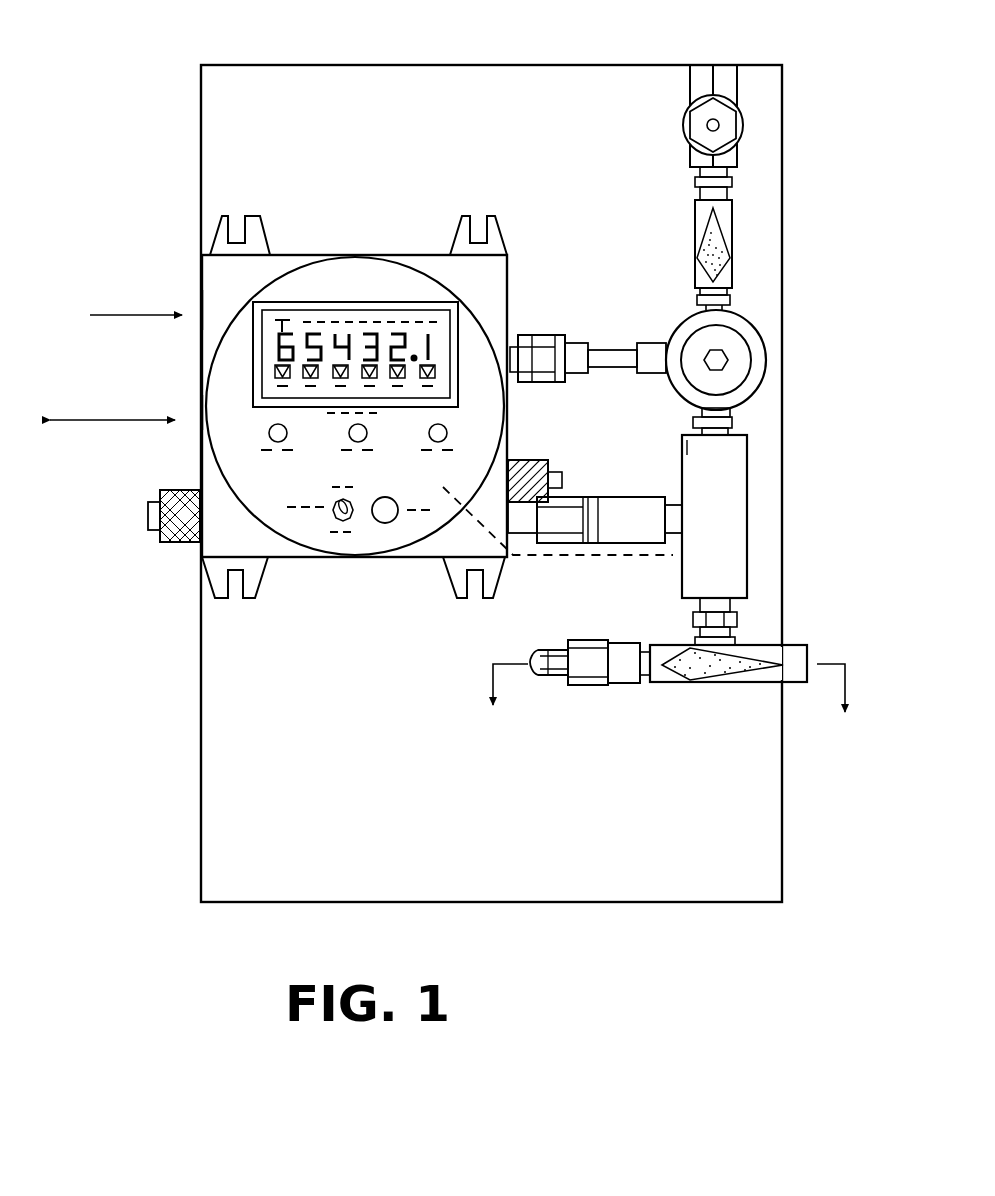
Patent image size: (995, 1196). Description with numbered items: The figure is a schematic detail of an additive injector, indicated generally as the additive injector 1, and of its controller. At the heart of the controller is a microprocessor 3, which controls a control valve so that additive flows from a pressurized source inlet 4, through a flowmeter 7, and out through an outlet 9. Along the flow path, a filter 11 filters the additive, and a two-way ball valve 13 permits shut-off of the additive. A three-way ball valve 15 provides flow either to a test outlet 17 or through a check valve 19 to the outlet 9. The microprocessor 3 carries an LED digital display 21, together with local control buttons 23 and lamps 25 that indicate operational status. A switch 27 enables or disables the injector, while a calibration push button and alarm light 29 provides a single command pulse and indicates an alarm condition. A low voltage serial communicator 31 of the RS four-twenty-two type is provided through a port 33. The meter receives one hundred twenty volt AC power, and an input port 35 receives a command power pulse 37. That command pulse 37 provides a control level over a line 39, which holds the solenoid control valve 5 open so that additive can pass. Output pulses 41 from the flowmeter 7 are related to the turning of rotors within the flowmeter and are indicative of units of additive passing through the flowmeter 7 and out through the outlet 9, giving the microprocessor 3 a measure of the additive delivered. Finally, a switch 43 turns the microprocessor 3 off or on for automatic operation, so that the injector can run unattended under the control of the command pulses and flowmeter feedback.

The additive injector 1 is at (176, 653).
The microprocessor 3 is at (403, 558).
The pressurized source inlet 4 is at (700, 65).
The solenoid control valve 5 is at (753, 398).
The flowmeter 7 is at (747, 533).
The outlet 9 is at (530, 660).
The filter 11 is at (683, 126).
The two-way ball valve 13 is at (695, 250).
The three-way ball valve 15 is at (755, 683).
The test outlet 17 is at (810, 653).
The check valve 19 is at (573, 687).
The LED digital display 21 is at (390, 303).
The local control buttons 23 is at (287, 370).
The indicator lamps 25 is at (296, 438).
The switch 27 is at (350, 508).
The calibration push button and alarm light 29 is at (147, 515).
The RS-422 low voltage communicator 31 is at (103, 420).
The port 33 is at (200, 408).
The input port 35 is at (200, 308).
The command power pulse 37 is at (115, 310).
The line 39 is at (597, 372).
The output pulses 41 is at (647, 497).
The switch 43 is at (527, 460).